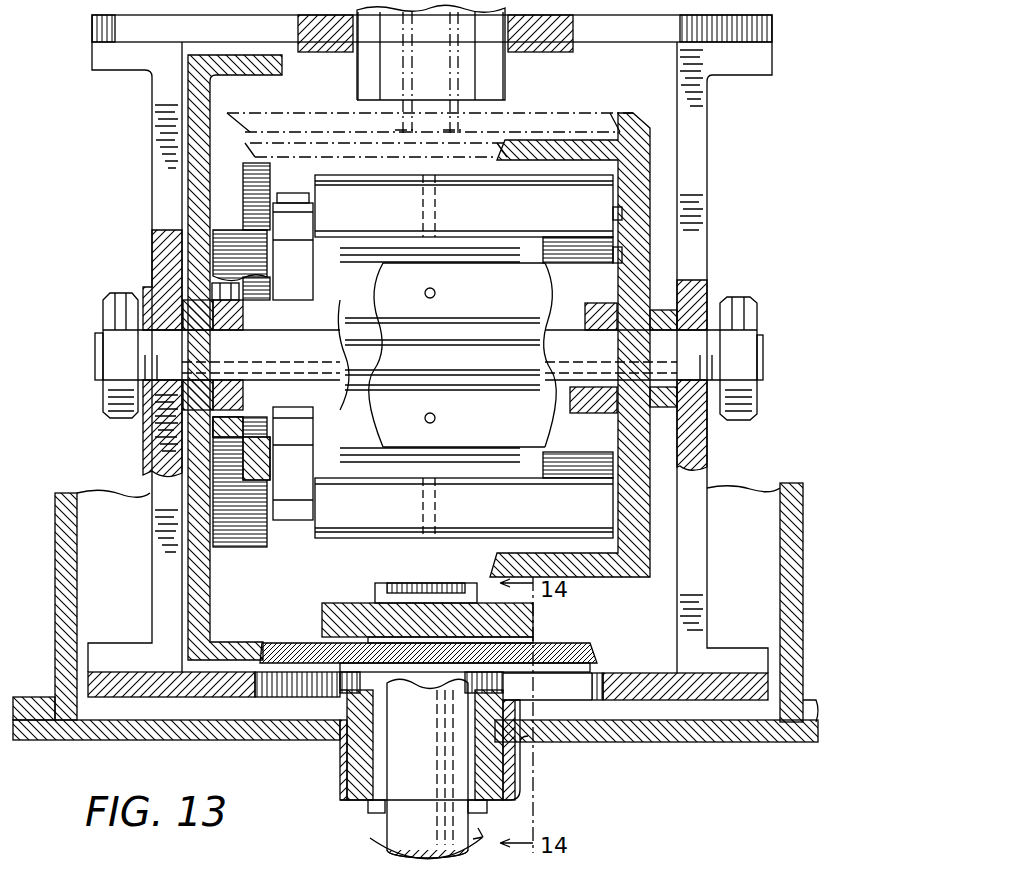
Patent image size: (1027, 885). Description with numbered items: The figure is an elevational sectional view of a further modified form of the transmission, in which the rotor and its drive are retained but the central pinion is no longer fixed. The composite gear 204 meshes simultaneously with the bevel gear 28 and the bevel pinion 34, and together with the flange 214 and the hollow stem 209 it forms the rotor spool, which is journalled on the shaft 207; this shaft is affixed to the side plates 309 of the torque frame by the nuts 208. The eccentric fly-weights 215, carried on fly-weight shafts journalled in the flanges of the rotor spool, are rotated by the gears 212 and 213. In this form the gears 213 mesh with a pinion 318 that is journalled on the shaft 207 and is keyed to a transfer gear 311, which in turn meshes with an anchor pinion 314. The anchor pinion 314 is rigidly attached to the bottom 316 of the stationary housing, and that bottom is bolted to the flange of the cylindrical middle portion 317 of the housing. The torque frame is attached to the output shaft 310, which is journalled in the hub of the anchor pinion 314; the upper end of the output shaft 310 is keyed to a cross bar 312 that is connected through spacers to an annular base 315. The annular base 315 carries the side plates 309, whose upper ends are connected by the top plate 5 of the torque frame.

The top plate 5 is at (92, 28).
The bevel gear 28 is at (333, 115).
The bevel pinion 34 is at (338, 152).
The composite gear 204 is at (707, 172).
The shaft 207 is at (282, 360).
The nuts 208 is at (115, 395).
The hollow stem 209 is at (597, 413).
The gears 212 is at (255, 172).
The gears 213 is at (247, 530).
The flange 214 is at (295, 520).
The eccentric fly-weights 215 is at (500, 294).
The side plates 309 is at (152, 158).
The output shaft 310 is at (405, 823).
The transfer gear 311 is at (207, 607).
The cross bar 312 is at (535, 622).
The anchor pinion 314 is at (590, 655).
The annular base 315 is at (717, 702).
The bottom 316 is at (85, 740).
The cylindrical middle portion 317 is at (55, 580).
The pinion 318 is at (228, 290).